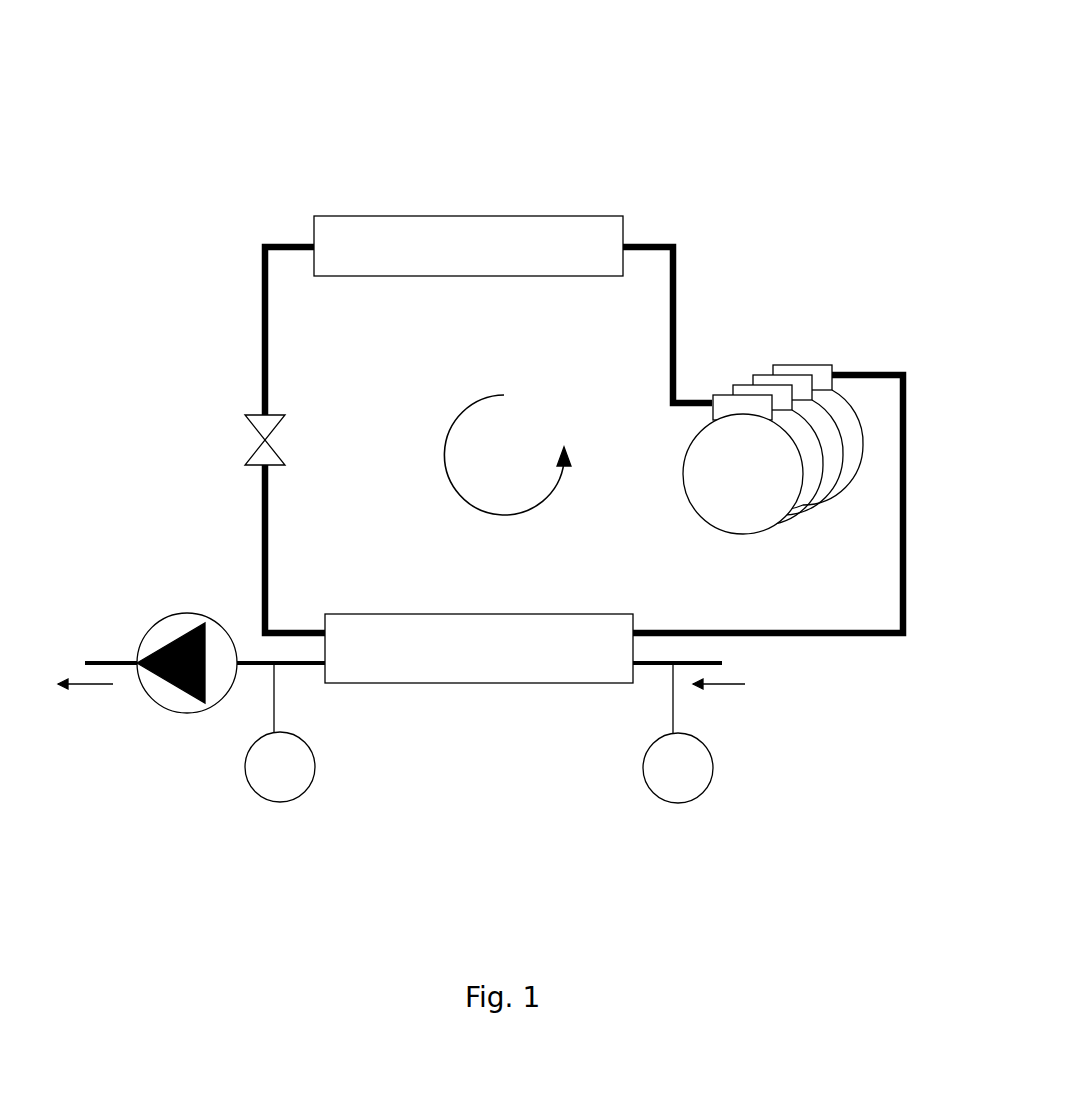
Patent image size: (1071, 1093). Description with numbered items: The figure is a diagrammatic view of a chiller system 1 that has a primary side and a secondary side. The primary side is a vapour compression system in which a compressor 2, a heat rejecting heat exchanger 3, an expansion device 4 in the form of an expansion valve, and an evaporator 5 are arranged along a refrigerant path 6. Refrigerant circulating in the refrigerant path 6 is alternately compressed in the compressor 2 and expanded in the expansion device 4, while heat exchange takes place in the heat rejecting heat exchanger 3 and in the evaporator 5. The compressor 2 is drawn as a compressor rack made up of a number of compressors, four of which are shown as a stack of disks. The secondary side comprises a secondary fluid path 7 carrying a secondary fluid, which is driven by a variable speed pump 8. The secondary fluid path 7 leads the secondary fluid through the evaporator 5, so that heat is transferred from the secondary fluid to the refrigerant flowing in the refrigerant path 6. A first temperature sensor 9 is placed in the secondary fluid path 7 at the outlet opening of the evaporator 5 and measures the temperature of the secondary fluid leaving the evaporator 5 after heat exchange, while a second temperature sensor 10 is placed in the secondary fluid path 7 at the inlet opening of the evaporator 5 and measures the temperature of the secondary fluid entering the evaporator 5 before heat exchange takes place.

The chiller system 1 is at (763, 83).
The compressor 2 is at (762, 462).
The heat rejecting heat exchanger 3 is at (473, 237).
The expansion device 4 is at (260, 425).
The evaporator 5 is at (474, 665).
The refrigerant path 6 is at (777, 633).
The secondary fluid path 7 is at (703, 665).
The variable speed pump 8 is at (163, 690).
The first temperature sensor 9 is at (282, 790).
The second temperature sensor 10 is at (678, 785).